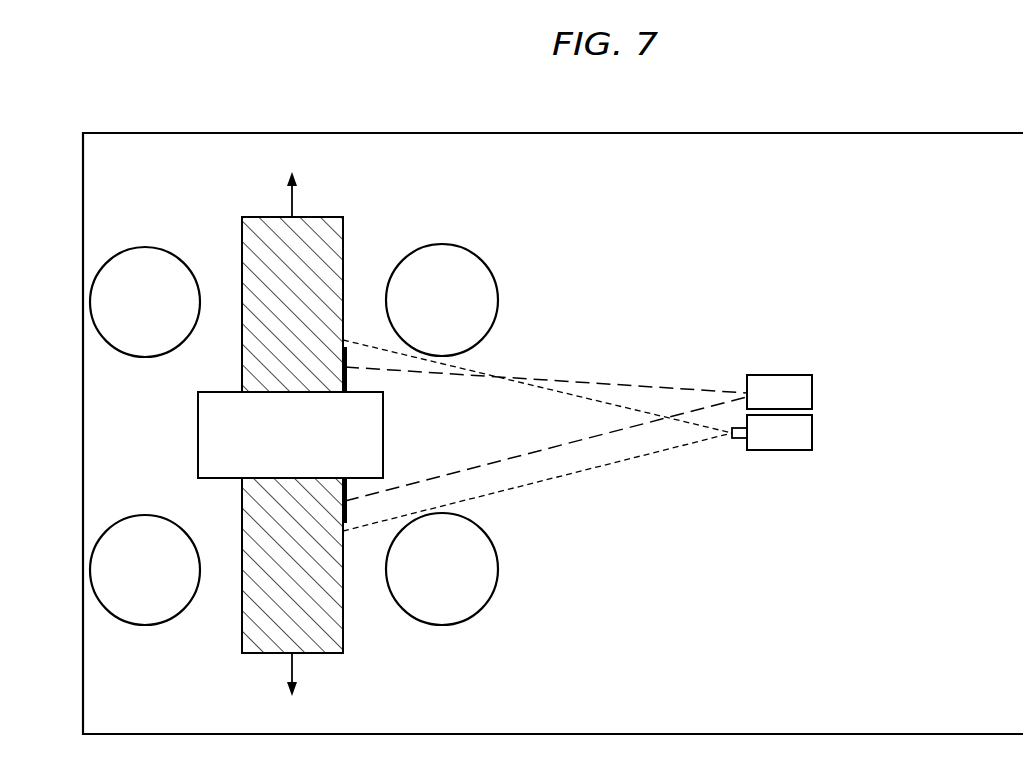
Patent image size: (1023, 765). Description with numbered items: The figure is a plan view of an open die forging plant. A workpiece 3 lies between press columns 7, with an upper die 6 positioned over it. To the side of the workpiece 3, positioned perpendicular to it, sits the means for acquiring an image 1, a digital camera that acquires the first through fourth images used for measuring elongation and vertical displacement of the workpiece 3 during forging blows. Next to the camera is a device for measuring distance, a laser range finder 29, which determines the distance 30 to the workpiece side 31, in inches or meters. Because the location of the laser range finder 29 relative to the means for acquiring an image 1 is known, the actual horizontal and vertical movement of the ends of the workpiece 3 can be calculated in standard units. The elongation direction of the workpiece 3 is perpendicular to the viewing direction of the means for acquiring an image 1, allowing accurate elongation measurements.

The means for acquiring an image 1 is at (778, 452).
The workpiece 3 is at (340, 653).
The upper die 6 is at (198, 428).
The press columns 7 is at (143, 247).
The laser range finder 29 is at (773, 375).
The distance 30 is at (655, 386).
The workpiece side 31 is at (348, 357).